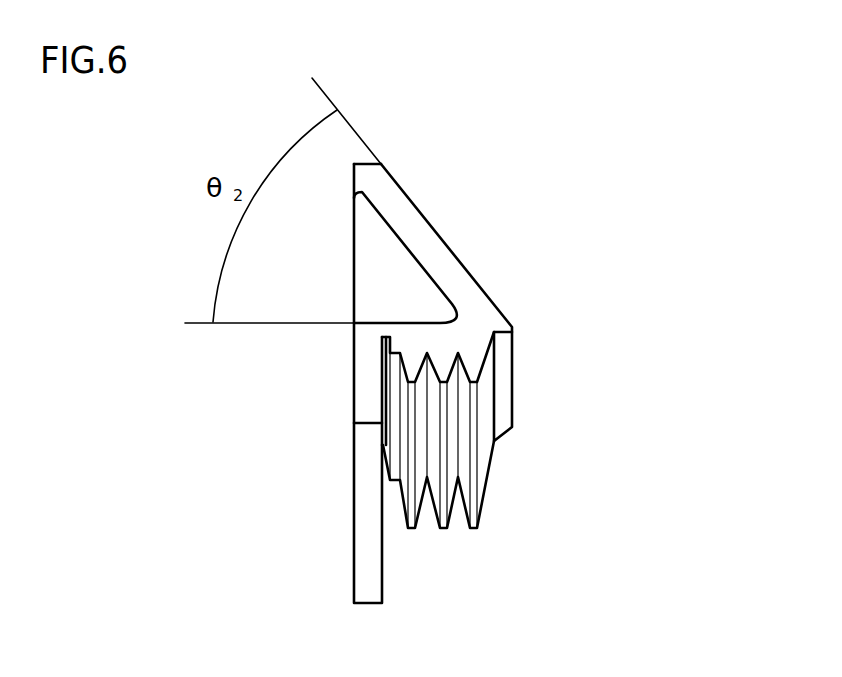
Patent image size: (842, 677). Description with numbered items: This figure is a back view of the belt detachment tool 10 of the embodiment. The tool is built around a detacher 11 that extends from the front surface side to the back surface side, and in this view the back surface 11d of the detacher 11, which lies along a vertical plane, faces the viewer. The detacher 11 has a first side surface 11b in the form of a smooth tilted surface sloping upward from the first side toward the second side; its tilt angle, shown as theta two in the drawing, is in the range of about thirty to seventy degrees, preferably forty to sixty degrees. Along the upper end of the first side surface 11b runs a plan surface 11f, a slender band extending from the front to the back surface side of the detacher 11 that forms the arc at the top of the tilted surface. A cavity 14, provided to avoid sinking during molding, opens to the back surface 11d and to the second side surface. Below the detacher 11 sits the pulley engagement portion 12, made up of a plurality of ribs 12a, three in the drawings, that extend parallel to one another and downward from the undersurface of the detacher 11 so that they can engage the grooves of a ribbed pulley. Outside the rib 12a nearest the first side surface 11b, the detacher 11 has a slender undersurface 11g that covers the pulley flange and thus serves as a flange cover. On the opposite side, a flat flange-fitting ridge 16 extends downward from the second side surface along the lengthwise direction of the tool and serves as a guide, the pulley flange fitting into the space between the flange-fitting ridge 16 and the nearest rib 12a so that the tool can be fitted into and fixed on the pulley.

The belt detachment tool 10 is at (552, 190).
The detacher 11 is at (412, 202).
The plan surface 11f is at (371, 163).
The first side surface 11b is at (482, 283).
The back surface 11d is at (422, 242).
The cavity 14 is at (407, 293).
The undersurface 11g is at (502, 390).
The pulley engagement portion 12 is at (490, 472).
The ribs 12a is at (473, 530).
The flange-fitting ridge 16 is at (372, 512).